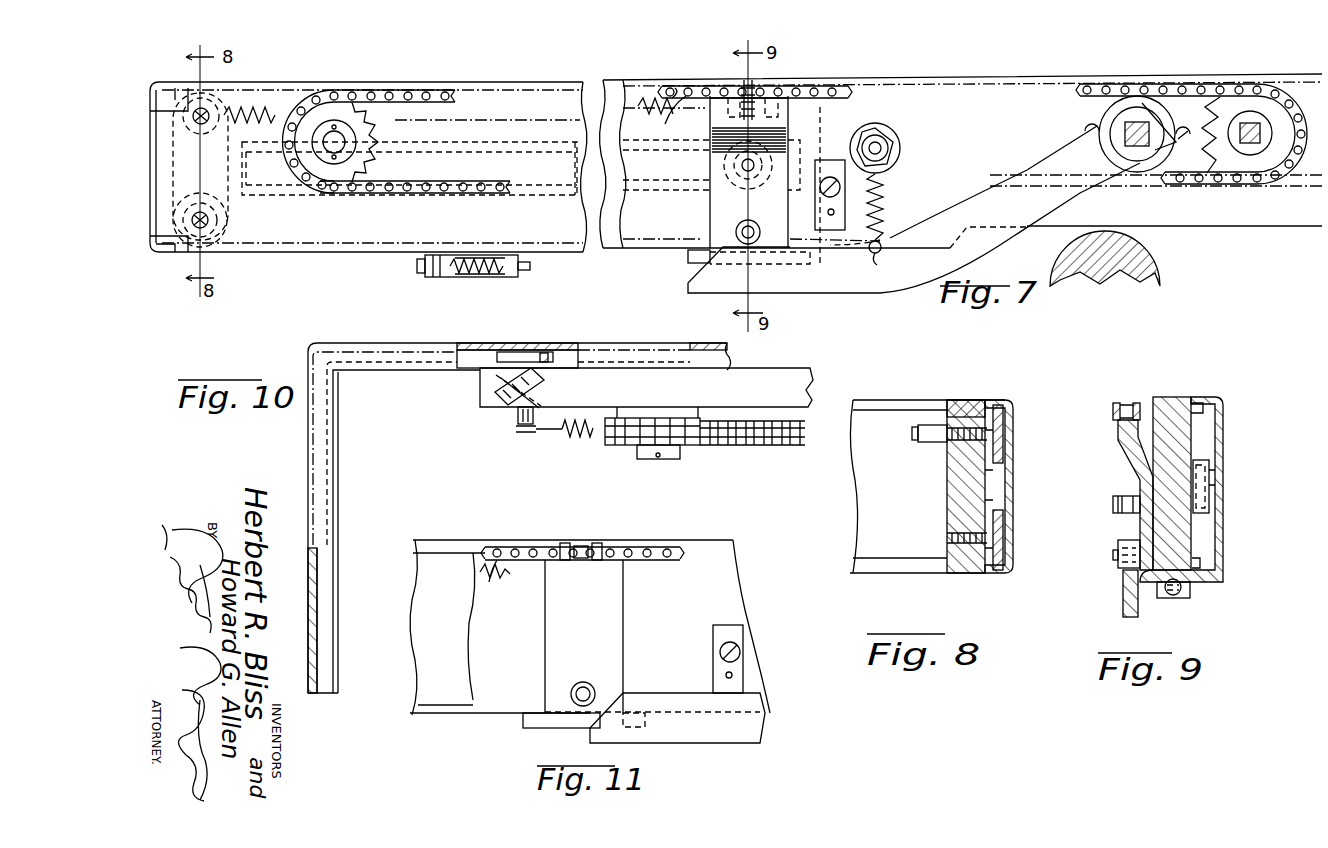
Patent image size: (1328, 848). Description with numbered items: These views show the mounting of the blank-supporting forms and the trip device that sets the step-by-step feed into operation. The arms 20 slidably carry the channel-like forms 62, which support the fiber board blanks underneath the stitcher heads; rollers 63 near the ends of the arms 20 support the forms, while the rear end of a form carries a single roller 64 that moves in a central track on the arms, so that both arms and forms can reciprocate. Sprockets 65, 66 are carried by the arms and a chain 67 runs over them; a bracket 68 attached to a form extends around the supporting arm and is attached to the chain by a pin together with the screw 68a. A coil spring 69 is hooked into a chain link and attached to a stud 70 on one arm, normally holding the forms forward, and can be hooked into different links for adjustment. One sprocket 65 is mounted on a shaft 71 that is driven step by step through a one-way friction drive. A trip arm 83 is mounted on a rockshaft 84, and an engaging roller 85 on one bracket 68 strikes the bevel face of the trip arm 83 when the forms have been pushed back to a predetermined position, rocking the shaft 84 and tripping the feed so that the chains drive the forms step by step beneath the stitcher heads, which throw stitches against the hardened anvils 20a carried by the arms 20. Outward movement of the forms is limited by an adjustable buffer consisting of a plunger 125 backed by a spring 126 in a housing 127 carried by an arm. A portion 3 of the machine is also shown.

In FIG. 7, the housing wall 3 is at (1115, 266).
In FIG. 7, the arms 20 is at (341, 246).
In FIG. 10, the arms 20 is at (772, 372).
In FIG. 11, the arms 20 is at (490, 684).
In FIG. 8, the arms 20 is at (972, 488).
In FIG. 9, the arms 20 is at (1178, 404).
In FIG. 10, the anvils 20a is at (538, 396).
In FIG. 7, the forms 62 is at (153, 253).
In FIG. 10, the forms 62 is at (407, 374).
In FIG. 11, the forms 62 is at (455, 530).
In FIG. 8, the forms 62 is at (1014, 462).
In FIG. 9, the forms 62 is at (1224, 530).
In FIG. 7, the rollers 63 is at (196, 166).
In FIG. 10, the rollers 63 is at (527, 355).
In FIG. 8, the rollers 63 is at (1000, 520).
In FIG. 7, the single roller 64 is at (706, 172).
In FIG. 9, the single roller 64 is at (1222, 478).
In FIG. 7, the sprocket 65 is at (1213, 162).
In FIG. 7, the sprocket 66 is at (366, 173).
In FIG. 10, the sprocket 66 is at (636, 422).
In FIG. 7, the chain 67 is at (476, 190).
In FIG. 10, the chain 67 is at (752, 446).
In FIG. 11, the chain 67 is at (677, 535).
In FIG. 9, the chain 67 is at (1113, 413).
In FIG. 7, the bracket 68 is at (716, 216).
In FIG. 11, the bracket 68 is at (563, 622).
In FIG. 9, the bracket 68 is at (1140, 523).
In FIG. 7, the screw 68a is at (754, 84).
In FIG. 11, the screw 68a is at (589, 544).
In FIG. 9, the screw 68a is at (1126, 434).
In FIG. 7, the coil spring 69 is at (270, 106).
In FIG. 10, the coil spring 69 is at (580, 440).
In FIG. 11, the coil spring 69 is at (486, 583).
In FIG. 7, the stud 70 is at (213, 100).
In FIG. 10, the stud 70 is at (512, 427).
In FIG. 8, the stud 70 is at (925, 442).
In FIG. 7, the shaft 71 is at (1252, 122).
In FIG. 7, the trip arm 83 is at (994, 238).
In FIG. 11, the trip arm 83 is at (752, 731).
In FIG. 9, the trip arm 83 is at (1124, 606).
In FIG. 7, the rockshaft 84 is at (1130, 152).
In FIG. 7, the engaging roller 85 is at (736, 226).
In FIG. 11, the engaging roller 85 is at (587, 683).
In FIG. 9, the engaging roller 85 is at (1124, 562).
In FIG. 7, the plunger 125 is at (528, 270).
In FIG. 9, the plunger 125 is at (1176, 598).
In FIG. 7, the spring 126 is at (459, 272).
In FIG. 7, the housing 127 is at (486, 277).
In FIG. 9, the housing 127 is at (1192, 592).